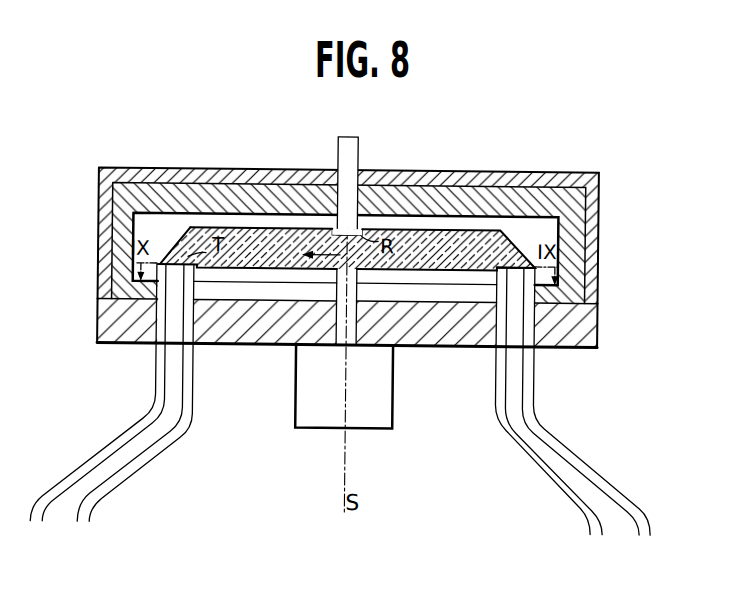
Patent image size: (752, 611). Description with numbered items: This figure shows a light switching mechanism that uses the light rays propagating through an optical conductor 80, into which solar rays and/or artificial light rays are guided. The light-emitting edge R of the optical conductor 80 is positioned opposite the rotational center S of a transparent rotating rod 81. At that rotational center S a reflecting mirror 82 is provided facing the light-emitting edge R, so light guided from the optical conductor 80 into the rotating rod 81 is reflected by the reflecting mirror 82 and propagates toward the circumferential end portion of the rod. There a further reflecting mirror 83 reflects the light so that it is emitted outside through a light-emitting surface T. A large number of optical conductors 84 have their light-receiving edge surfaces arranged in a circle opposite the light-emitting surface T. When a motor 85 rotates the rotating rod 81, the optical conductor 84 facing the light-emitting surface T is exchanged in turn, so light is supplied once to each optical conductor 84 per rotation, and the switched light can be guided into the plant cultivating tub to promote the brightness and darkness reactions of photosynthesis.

The optical conductor 80 is at (358, 158).
The transparent rotating rod 81 is at (241, 234).
The reflecting mirror 82 is at (346, 268).
The reflecting mirror 83 is at (186, 232).
The optical conductors 84 is at (161, 378).
The motor 85 is at (396, 389).